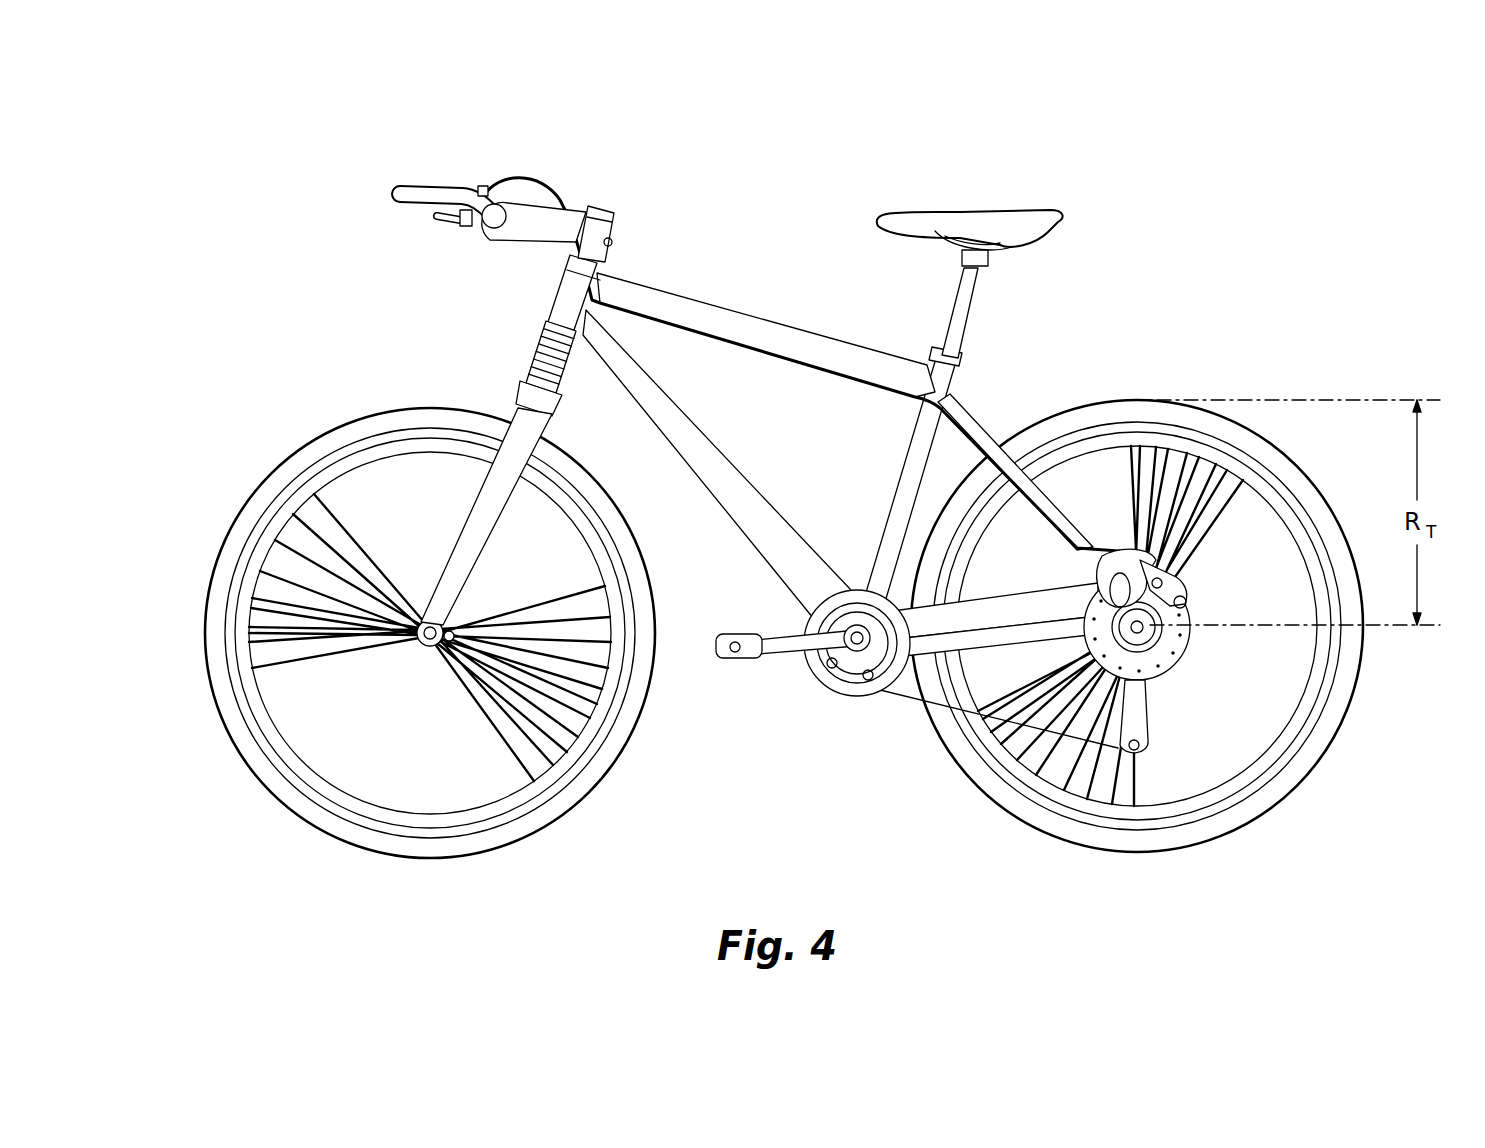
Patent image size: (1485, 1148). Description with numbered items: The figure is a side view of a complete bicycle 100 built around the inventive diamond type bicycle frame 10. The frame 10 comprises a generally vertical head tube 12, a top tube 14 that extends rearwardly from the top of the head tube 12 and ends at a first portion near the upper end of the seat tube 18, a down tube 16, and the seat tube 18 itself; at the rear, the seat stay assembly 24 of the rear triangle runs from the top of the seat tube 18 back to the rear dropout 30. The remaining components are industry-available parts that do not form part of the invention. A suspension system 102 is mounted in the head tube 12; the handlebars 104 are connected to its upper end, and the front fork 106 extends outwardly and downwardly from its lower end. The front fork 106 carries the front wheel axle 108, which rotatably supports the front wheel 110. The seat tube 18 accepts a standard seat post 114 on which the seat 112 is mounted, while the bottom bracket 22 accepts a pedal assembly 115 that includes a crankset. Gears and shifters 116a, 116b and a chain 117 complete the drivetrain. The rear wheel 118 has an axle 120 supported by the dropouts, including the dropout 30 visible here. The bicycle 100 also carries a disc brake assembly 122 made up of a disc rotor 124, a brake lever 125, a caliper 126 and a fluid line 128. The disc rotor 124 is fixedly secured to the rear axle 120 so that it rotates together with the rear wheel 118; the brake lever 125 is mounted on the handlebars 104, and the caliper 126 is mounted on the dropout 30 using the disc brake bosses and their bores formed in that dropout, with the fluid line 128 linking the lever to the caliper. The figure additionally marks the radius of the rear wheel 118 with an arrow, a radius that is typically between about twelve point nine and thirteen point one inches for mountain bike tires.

The bicycle frame 10 is at (815, 386).
The head tube 12 is at (558, 289).
The top tube 14 is at (687, 280).
The down tube 16 is at (765, 472).
The seat tube 18 is at (897, 482).
The bottom bracket 22 is at (793, 702).
The seat stay assembly 24 is at (986, 420).
The rear dropout 30 is at (1122, 562).
The bicycle 100 is at (364, 195).
The suspension system 102 is at (514, 387).
The handlebars 104 is at (423, 174).
The front fork 106 is at (468, 527).
The front wheel axle 108 is at (425, 648).
The front wheel 110 is at (221, 455).
The seat 112 is at (968, 212).
The seat post 114 is at (937, 326).
The pedal assembly 115 is at (816, 708).
The gears and shifters 116a is at (848, 668).
The gears and shifters 116b is at (1188, 662).
The chain 117 is at (900, 690).
The rear wheel 118 is at (1336, 497).
The rear wheel axle 120 is at (1157, 677).
The disc brake assembly 122 is at (1173, 622).
The disc rotor 124 is at (1192, 648).
The brake lever 125 is at (459, 230).
The caliper 126 is at (1172, 576).
The fluid line 128 is at (540, 178).